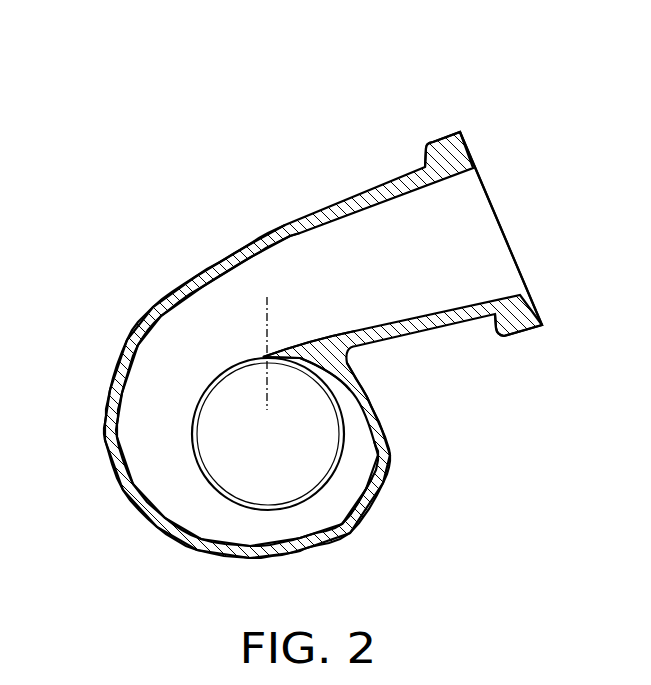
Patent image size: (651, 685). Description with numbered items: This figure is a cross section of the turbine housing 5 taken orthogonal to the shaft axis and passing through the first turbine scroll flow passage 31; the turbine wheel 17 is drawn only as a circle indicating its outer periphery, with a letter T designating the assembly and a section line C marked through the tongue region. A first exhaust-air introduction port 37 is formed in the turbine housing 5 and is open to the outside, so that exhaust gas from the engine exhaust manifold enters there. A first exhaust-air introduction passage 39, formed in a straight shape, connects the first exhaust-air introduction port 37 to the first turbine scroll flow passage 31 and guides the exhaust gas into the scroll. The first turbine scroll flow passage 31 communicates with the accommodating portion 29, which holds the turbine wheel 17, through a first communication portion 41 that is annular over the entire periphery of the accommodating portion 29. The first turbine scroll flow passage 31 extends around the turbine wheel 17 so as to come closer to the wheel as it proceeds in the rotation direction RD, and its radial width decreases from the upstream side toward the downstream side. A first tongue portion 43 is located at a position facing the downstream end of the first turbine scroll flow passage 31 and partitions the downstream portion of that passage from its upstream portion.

The turbine housing 5 is at (362, 193).
The first exhaust-air introduction port 37 is at (493, 205).
The first turbine scroll flow passage 31 is at (150, 437).
The first exhaust-air introduction passage 39 is at (327, 250).
The first tongue portion 43 is at (268, 362).
The accommodating portion 29 is at (254, 444).
The turbine wheel 17 is at (348, 448).
The first communication portion 41 is at (332, 482).
The section line C is at (272, 313).
The rotation direction RD is at (252, 477).
The turbine T is at (68, 98).